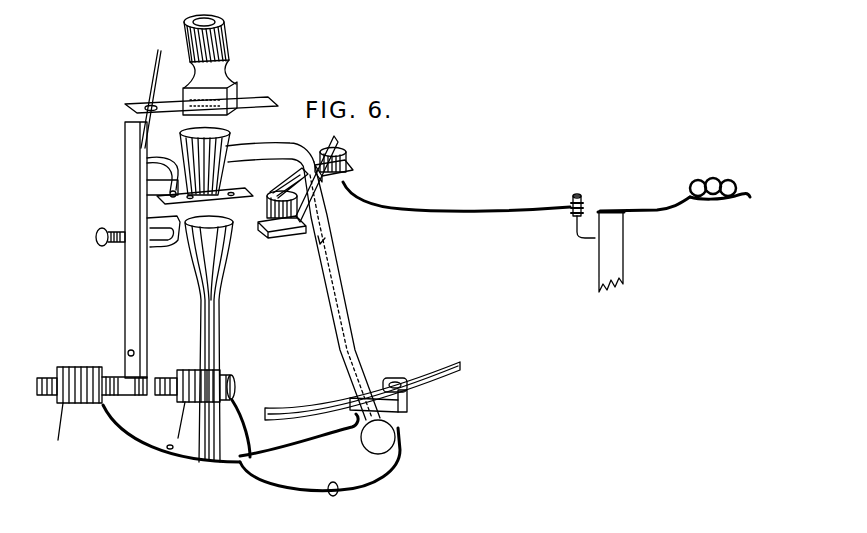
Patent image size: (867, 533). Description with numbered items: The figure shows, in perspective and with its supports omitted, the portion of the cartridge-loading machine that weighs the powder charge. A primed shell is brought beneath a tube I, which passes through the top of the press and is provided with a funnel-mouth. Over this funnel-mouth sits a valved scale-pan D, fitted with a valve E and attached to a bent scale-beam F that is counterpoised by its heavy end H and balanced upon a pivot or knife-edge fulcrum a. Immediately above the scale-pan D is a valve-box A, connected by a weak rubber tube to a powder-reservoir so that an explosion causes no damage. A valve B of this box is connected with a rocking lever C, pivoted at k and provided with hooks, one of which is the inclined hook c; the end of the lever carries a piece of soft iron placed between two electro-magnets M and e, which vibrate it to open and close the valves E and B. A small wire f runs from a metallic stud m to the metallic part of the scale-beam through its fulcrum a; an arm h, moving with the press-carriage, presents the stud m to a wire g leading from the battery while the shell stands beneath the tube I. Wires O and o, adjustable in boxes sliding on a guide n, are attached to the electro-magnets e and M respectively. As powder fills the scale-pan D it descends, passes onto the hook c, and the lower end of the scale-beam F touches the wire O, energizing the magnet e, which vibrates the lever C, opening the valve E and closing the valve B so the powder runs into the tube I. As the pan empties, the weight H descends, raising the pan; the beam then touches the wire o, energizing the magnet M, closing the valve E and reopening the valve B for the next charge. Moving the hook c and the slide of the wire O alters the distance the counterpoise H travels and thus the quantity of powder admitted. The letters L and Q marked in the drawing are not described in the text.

The valve-box A is at (210, 65).
The valve B is at (201, 99).
The rocking lever C is at (152, 250).
The hook c is at (123, 207).
The scale-pan D is at (205, 162).
The valve E is at (205, 196).
The bent scale-beam F is at (303, 281).
The lever L is at (321, 247).
The tube I is at (209, 339).
The pivot or knife-edge fulcrum a is at (305, 187).
The small wire f is at (456, 207).
The metallic stud m is at (574, 220).
The arm h is at (611, 252).
The wire g is at (675, 194).
The electro-magnet M is at (92, 403).
The electro-magnet e is at (195, 404).
The pivot k is at (125, 353).
The connecting wires Q is at (251, 448).
The heavy end H is at (378, 437).
The guide n is at (362, 389).
The wire o is at (399, 379).
The wire O is at (379, 407).